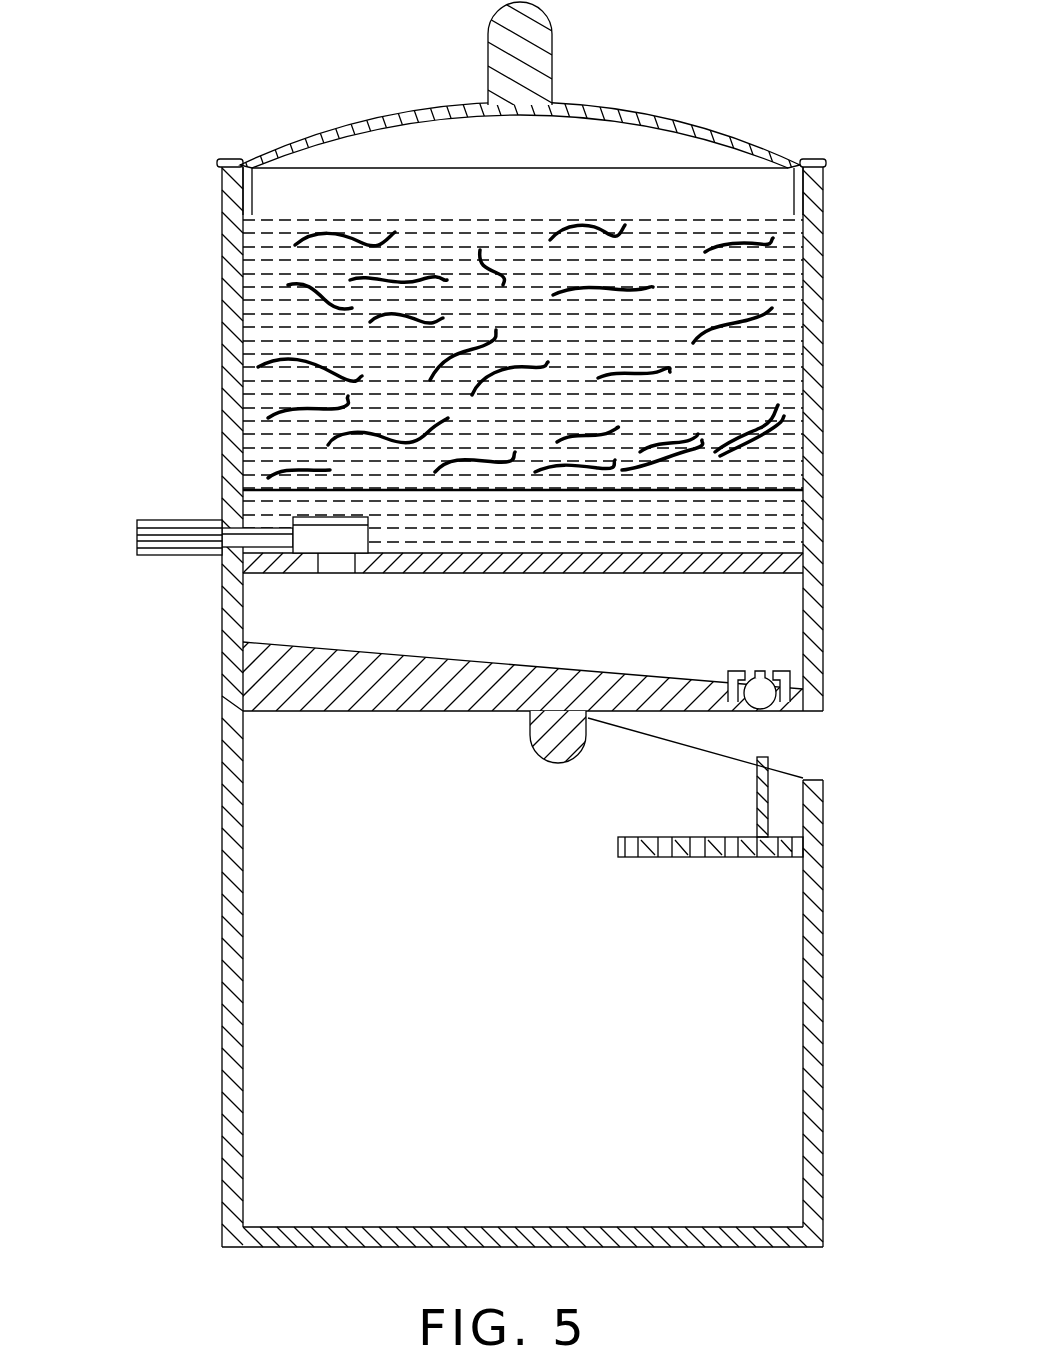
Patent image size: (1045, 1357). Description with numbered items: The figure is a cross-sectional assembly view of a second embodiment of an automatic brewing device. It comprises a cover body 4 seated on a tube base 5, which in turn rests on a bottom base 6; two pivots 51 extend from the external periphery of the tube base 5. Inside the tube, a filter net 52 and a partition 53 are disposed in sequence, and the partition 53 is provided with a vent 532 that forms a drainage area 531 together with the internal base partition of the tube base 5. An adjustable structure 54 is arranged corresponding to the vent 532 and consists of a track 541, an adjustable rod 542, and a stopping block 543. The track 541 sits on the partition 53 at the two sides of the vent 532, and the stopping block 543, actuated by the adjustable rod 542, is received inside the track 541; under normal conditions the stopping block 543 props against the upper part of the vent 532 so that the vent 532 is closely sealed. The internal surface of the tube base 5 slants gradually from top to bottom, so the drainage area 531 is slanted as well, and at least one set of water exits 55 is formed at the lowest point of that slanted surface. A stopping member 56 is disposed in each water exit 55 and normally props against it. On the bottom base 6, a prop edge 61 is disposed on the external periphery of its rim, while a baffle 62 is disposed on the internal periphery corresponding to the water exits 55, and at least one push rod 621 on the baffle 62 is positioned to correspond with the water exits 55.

The cover body 4 is at (700, 133).
The tube base 5 is at (818, 493).
The pivot 51 is at (543, 740).
The filter net 52 is at (787, 490).
The partition 53 is at (775, 562).
The drainage area 531 is at (780, 625).
The vent 532 is at (325, 570).
The adjustable structure 54 is at (196, 483).
The track 541 is at (315, 518).
The adjustable rod 542 is at (162, 532).
The stopping block 543 is at (313, 540).
The water exit 55 is at (782, 695).
The stopping member 56 is at (765, 690).
The bottom base 6 is at (822, 963).
The prop edge 61 is at (795, 772).
The baffle 62 is at (762, 848).
The push rod 621 is at (762, 800).